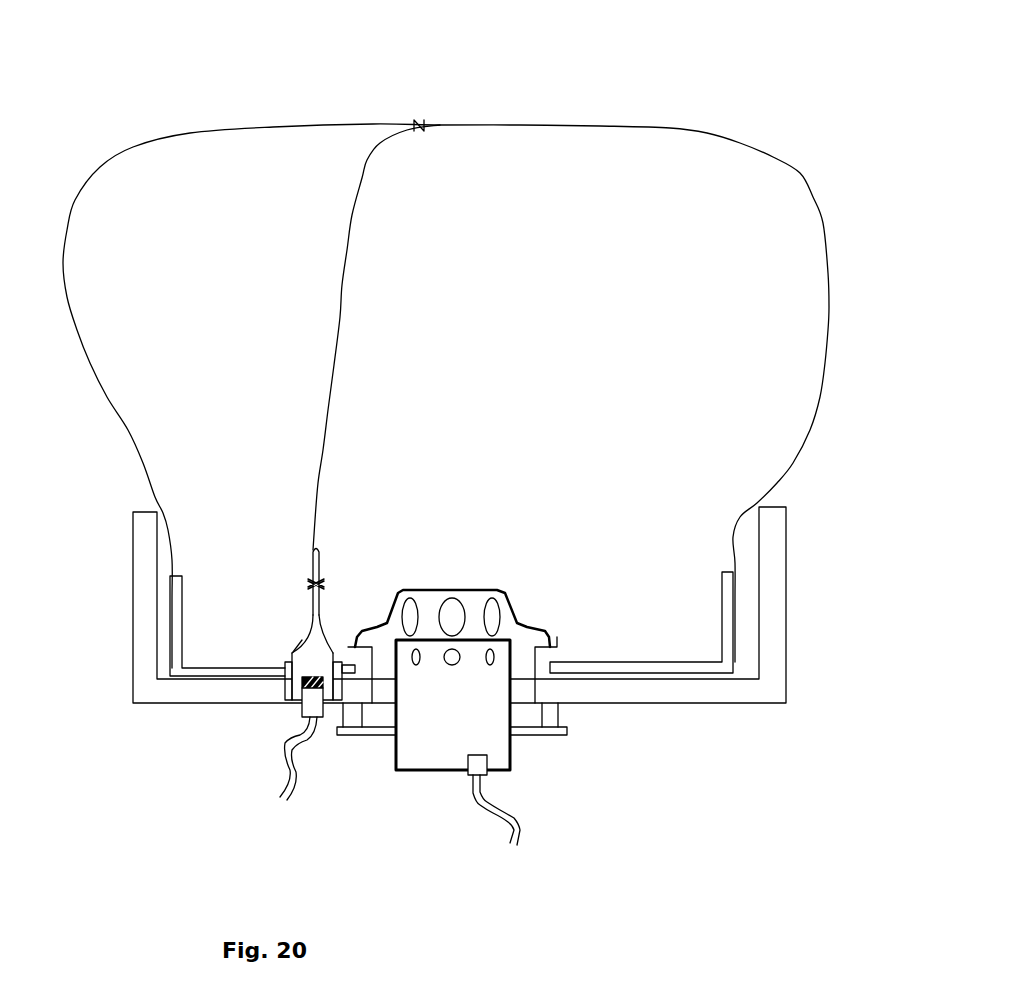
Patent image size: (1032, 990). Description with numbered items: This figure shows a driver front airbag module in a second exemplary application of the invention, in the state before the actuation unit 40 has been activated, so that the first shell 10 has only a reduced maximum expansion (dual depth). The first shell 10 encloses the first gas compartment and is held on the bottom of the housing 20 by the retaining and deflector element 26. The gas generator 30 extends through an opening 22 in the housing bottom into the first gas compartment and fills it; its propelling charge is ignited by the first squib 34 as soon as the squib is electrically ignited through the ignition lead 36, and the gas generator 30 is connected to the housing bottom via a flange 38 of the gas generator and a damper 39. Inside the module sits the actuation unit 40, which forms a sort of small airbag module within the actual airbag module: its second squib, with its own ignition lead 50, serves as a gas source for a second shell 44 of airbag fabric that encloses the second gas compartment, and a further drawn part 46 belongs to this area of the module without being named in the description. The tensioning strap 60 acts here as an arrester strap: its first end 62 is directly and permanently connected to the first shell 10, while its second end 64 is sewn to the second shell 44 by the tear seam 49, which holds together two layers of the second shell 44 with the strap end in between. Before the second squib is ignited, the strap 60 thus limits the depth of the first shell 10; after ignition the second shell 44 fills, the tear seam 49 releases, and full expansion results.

The first shell 10 is at (668, 128).
The housing 20 is at (143, 560).
The opening 22 is at (538, 700).
The retaining and deflector element 26 is at (625, 667).
The gas generator 30 is at (428, 682).
The first squib 34 is at (484, 765).
The ignition lead 36 is at (493, 813).
The flange 38 is at (555, 733).
The damper 39 is at (567, 730).
The actuation unit 40 is at (296, 690).
The second shell 44 is at (305, 632).
The support bracket 46 is at (347, 745).
The tear seam 49 is at (309, 583).
The ignition lead 50 is at (308, 740).
The tensioning strap 60 is at (328, 410).
The first end 62 is at (440, 124).
The second end 64 is at (310, 598).